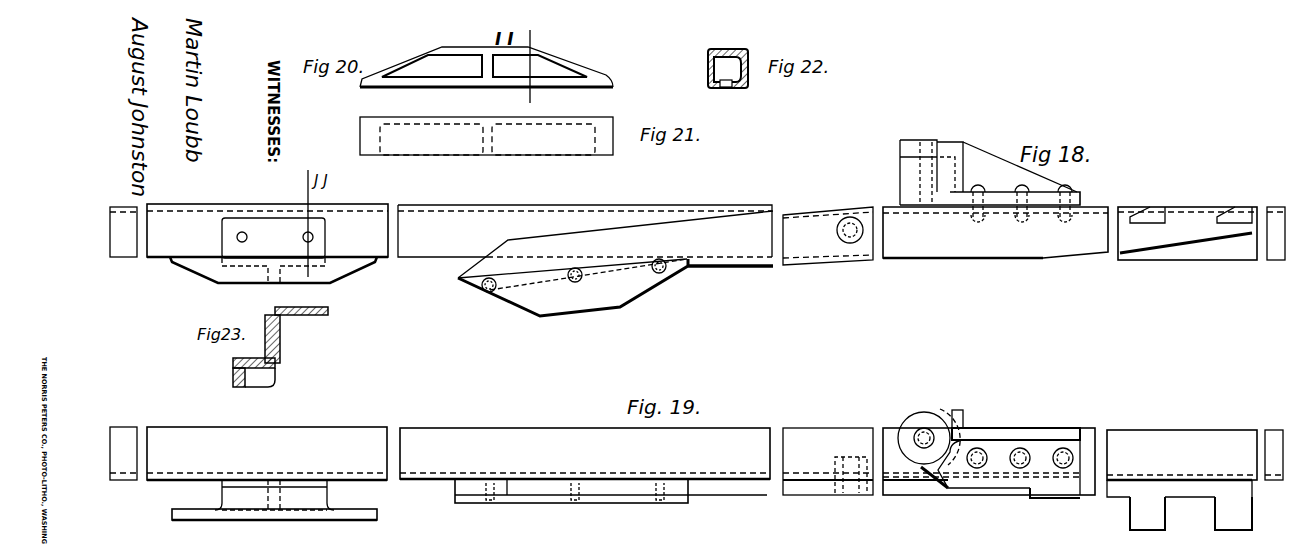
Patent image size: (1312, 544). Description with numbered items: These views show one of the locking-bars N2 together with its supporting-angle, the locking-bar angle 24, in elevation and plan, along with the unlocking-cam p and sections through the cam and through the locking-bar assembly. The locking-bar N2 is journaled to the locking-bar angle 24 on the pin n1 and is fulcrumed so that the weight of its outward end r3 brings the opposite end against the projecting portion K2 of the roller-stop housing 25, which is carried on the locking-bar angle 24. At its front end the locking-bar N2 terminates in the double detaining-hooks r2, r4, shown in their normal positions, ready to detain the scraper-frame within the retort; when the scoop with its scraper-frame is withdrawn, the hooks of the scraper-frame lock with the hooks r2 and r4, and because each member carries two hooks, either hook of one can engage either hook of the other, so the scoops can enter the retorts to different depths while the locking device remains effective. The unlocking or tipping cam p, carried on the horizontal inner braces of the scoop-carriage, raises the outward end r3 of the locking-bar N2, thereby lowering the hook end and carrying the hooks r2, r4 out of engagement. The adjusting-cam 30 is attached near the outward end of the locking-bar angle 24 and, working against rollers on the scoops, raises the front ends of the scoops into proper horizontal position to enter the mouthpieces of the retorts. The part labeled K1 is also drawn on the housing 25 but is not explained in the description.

In FIG. 18, the locking-bar angle 24 is at (437, 206).
In FIG. 23, the locking-bar angle 24 is at (328, 312).
In FIG. 19, the locking-bar angle 24 is at (455, 428).
In FIG. 18, the roller-stop housing 25 is at (980, 133).
In FIG. 19, the roller-stop housing 25 is at (983, 428).
In FIG. 18, the adjusting-cam 30 is at (188, 275).
In FIG. 23, the adjusting-cam 30 is at (275, 372).
In FIG. 20, the unlocking or tipping cam p is at (613, 82).
In FIG. 18, the detaining-hook r2 is at (1148, 207).
In FIG. 19, the detaining-hook r2 is at (1166, 516).
In FIG. 18, the outward end of locking-bar r3 is at (450, 283).
In FIG. 18, the detaining-hook r4 is at (1235, 207).
In FIG. 19, the detaining-hook r4 is at (1254, 516).
In FIG. 18, the locking-bar N2 is at (727, 263).
In FIG. 18, the pin n1 is at (850, 244).
In FIG. 18, the hinge bracket K1 is at (898, 176).
In FIG. 19, the hinge bracket K1 is at (911, 421).
In FIG. 19, the projecting portion of roller-stop housing K2 is at (1040, 500).